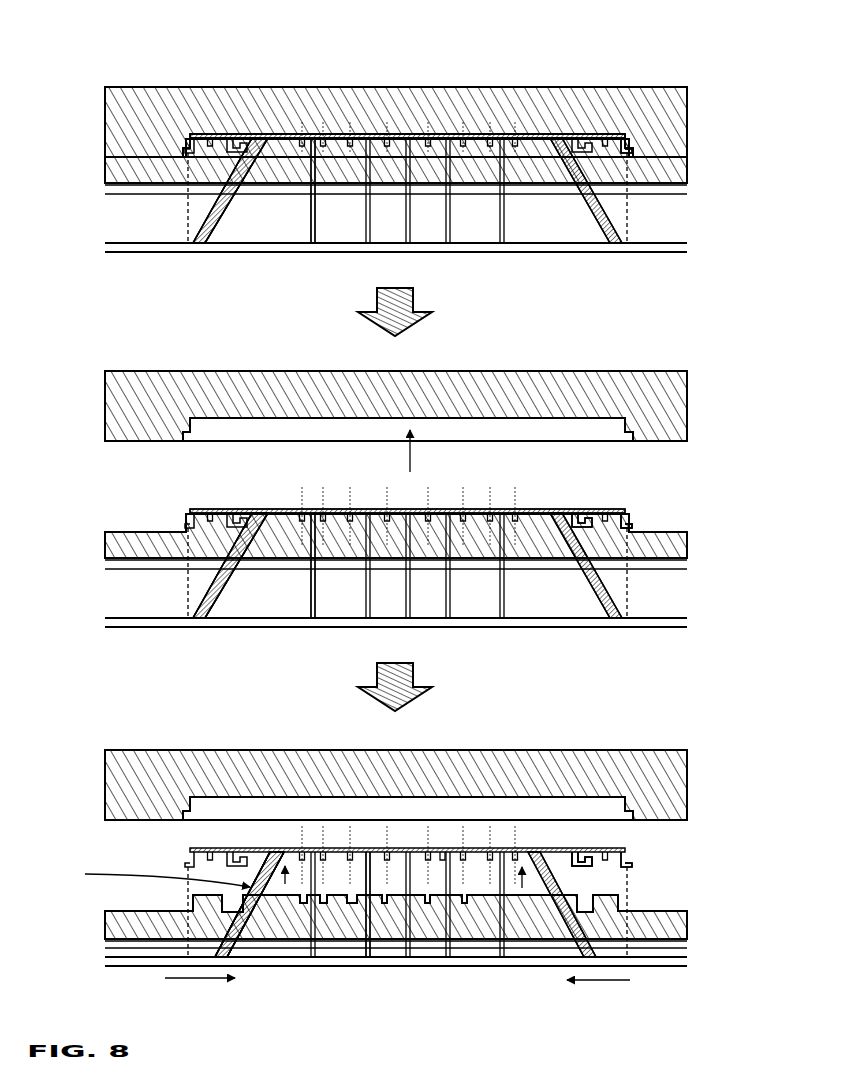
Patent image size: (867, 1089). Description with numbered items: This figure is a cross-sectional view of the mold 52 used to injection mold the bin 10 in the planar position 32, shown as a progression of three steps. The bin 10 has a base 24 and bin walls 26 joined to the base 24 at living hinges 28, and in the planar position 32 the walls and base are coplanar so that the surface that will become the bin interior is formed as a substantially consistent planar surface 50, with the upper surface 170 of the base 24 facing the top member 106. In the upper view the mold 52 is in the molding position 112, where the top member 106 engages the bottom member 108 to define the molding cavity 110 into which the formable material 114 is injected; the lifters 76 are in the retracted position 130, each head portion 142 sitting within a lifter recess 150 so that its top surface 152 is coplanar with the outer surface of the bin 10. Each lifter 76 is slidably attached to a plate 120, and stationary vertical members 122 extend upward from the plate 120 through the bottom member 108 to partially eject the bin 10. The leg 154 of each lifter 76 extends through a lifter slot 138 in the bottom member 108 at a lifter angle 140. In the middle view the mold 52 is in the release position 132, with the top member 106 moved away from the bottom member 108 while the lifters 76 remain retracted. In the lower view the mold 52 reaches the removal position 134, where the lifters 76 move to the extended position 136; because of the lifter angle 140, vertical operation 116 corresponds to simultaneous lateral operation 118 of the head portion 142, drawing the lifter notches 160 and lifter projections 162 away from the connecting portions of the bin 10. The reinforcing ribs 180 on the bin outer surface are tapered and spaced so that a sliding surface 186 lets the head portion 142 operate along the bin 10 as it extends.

The bin 10 is at (443, 128).
The base 24 is at (405, 136).
The bin walls 26 is at (268, 138).
The living hinges 28 is at (355, 136).
The planar position 32 is at (598, 128).
The planar surface 50 is at (530, 509).
The mold 52 is at (90, 143).
The lifter 76 is at (233, 205).
The top member 106 is at (677, 107).
The bottom member 108 is at (690, 174).
The molding cavity 110 is at (528, 128).
The molding position 112 is at (232, 73).
The formable material 114 is at (195, 130).
The vertical operation 116 is at (420, 443).
The lateral operation 118 is at (630, 980).
The plate 120 is at (132, 252).
The vertical members 122 is at (318, 230).
The retracted position 130 is at (583, 202).
The release position 132 is at (90, 521).
The removal position 134 is at (82, 782).
The extended position 136 is at (240, 952).
The lifter slot 138 is at (227, 927).
The lifter angle 140 is at (228, 236).
The head portion 142 is at (630, 527).
The lifter recess 150 is at (580, 897).
The top surface 152 is at (243, 138).
The leg 154 is at (605, 216).
The lifter notch 160 is at (146, 875).
The lifter projection 162 is at (223, 862).
The upper surface 170 is at (408, 510).
The reinforcing ribs 180 is at (443, 858).
The sliding surface 186 is at (573, 863).